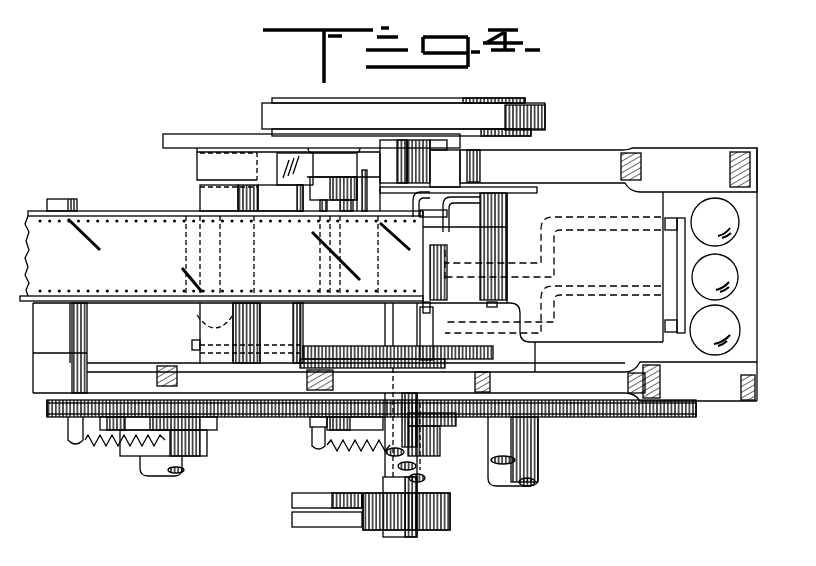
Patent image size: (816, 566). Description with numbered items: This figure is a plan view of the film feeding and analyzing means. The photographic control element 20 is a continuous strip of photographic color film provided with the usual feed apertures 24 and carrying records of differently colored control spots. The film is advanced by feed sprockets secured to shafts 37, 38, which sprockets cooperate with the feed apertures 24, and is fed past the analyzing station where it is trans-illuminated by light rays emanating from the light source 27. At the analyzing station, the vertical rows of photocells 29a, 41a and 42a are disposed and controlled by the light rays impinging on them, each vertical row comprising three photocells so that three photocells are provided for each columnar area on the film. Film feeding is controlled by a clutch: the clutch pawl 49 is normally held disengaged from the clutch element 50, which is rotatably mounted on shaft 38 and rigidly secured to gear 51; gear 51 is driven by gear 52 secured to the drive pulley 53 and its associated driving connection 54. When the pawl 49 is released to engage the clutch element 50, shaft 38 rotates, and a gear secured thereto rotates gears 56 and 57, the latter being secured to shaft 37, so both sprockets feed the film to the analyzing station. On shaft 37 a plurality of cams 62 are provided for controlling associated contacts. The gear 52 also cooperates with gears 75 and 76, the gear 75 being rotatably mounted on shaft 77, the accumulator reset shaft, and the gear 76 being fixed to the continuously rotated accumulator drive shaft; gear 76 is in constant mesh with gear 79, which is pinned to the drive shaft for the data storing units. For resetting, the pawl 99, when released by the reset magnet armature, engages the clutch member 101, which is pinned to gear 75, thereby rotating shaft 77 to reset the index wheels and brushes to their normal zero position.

The photographic control element 20 is at (125, 246).
The feed apertures 24 is at (98, 211).
The light source 27 is at (187, 211).
The vertical row of photocells 29a is at (708, 337).
The shaft 37 is at (393, 319).
The shaft 38 is at (430, 468).
The vertical row of photocells 41a is at (707, 293).
The vertical row of photocells 42a is at (705, 230).
The clutch pawl 49 is at (305, 430).
The clutch element 50 is at (340, 446).
The gear 51 is at (478, 438).
The gear 52 is at (548, 422).
The drive pulley 53 is at (495, 103).
The driving connection 54 is at (545, 128).
The gear 56 is at (190, 344).
The gear 57 is at (458, 353).
The cams 62 is at (440, 510).
The gear 75 is at (62, 409).
The gear 76 is at (597, 418).
The shaft 77 is at (180, 470).
The gear 79 is at (690, 418).
The pawl 99 is at (72, 428).
The clutch member 101 is at (122, 432).